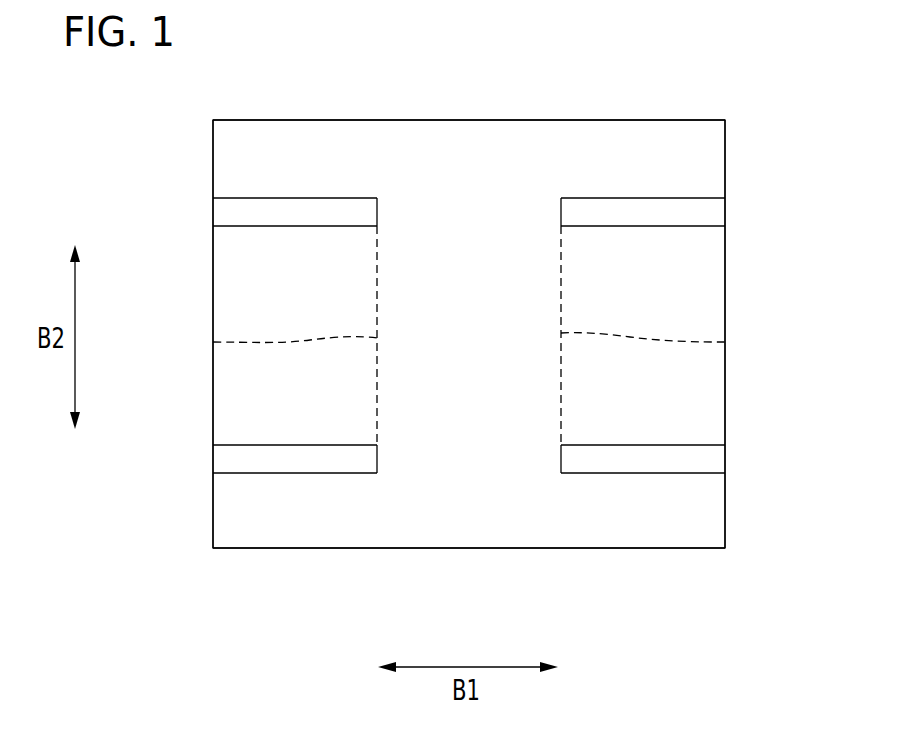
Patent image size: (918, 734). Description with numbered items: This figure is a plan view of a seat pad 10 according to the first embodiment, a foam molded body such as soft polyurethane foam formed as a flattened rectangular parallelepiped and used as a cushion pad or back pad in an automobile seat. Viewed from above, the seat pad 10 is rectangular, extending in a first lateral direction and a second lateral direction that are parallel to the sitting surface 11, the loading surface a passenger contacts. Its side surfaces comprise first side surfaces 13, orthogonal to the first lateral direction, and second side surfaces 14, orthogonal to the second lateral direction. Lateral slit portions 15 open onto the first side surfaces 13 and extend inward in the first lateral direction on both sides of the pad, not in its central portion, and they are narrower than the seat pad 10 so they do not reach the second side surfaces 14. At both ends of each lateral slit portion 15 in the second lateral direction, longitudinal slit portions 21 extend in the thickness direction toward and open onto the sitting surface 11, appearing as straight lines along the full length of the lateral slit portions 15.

The seat pad 10 is at (718, 74).
The sitting surface 11 is at (507, 144).
The first side surface 13 is at (212, 510).
The second side surface 14 is at (433, 119).
The lateral slit portion 15 is at (213, 342).
The longitudinal slit portion 21 is at (292, 188).